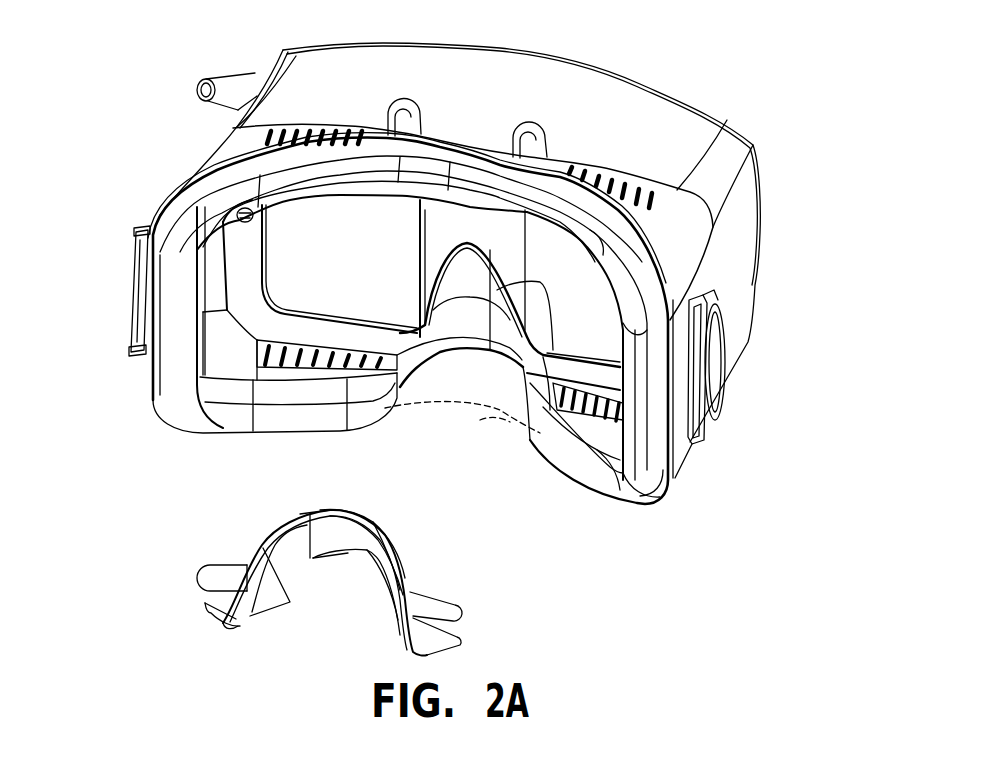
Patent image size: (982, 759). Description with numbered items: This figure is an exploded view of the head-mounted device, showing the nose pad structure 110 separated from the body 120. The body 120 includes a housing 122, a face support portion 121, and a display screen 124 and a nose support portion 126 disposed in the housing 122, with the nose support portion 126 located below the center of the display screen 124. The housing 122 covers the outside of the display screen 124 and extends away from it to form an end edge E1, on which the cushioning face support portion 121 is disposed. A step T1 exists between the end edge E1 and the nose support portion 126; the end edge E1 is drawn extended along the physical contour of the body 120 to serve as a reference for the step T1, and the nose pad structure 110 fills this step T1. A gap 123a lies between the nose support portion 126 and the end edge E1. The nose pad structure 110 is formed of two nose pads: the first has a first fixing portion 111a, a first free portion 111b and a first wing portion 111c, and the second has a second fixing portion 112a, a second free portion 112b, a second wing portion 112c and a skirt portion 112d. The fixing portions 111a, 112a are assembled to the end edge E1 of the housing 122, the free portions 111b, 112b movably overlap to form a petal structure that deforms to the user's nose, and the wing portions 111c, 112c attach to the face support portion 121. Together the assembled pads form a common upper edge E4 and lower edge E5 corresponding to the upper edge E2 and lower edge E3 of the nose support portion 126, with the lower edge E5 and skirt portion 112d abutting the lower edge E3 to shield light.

The nose pad structure 110 is at (150, 565).
The first fixing portion 111a is at (225, 573).
The first free portion 111b is at (355, 513).
The first wing portion 111c is at (218, 608).
The second fixing portion 112a is at (440, 598).
The second free portion 112b is at (356, 562).
The second wing portion 112c is at (445, 640).
The skirt portion 112d is at (396, 560).
The body 120 is at (150, 97).
The face support portion 121 is at (653, 493).
The housing 122 is at (745, 263).
The gap 123a is at (456, 360).
The display screen 124 is at (290, 240).
The nose support portion 126 is at (554, 355).
The end edge E1 is at (492, 428).
The upper edge E2 is at (448, 250).
The lower edge E3 is at (413, 385).
The upper edge E4 is at (307, 508).
The lower edge E5 is at (344, 562).
The step T1 is at (483, 358).